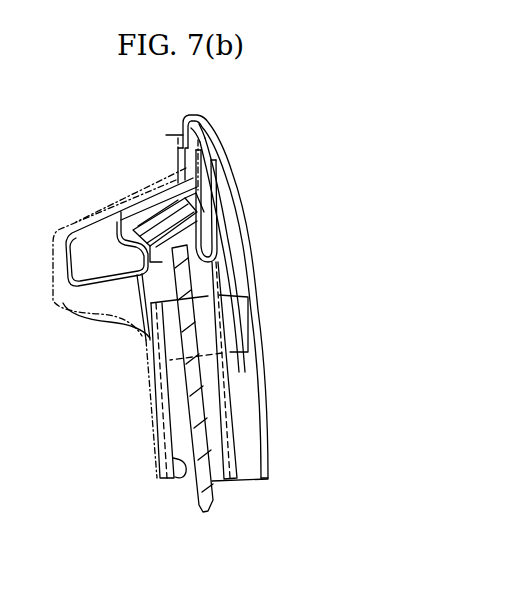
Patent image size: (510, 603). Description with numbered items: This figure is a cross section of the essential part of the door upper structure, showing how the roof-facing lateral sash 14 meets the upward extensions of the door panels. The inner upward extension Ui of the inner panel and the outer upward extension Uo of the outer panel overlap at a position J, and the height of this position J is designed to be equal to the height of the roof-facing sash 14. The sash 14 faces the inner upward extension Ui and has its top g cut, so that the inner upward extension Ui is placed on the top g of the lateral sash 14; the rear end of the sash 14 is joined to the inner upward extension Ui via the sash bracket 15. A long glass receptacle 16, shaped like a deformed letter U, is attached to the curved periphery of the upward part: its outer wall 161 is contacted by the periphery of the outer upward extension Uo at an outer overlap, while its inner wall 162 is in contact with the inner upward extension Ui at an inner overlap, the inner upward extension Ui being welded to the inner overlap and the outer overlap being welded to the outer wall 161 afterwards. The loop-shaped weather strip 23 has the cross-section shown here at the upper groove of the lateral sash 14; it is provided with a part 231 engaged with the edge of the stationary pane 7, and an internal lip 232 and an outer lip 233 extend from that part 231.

The lateral sash 14 is at (228, 175).
The sash bracket 15 is at (228, 274).
The top g is at (214, 201).
The position J is at (183, 135).
The internal lip 232 is at (138, 283).
The weather strip 23 is at (236, 299).
The part 231 is at (178, 223).
The outer lip 233 is at (218, 260).
The glass receptacle 16 is at (152, 435).
The outer wall 161 is at (223, 414).
The inner wall 162 is at (178, 478).
The stationary pane 7 is at (210, 493).
The inner upward extension Ui is at (142, 392).
The outer upward extension Uo is at (270, 458).